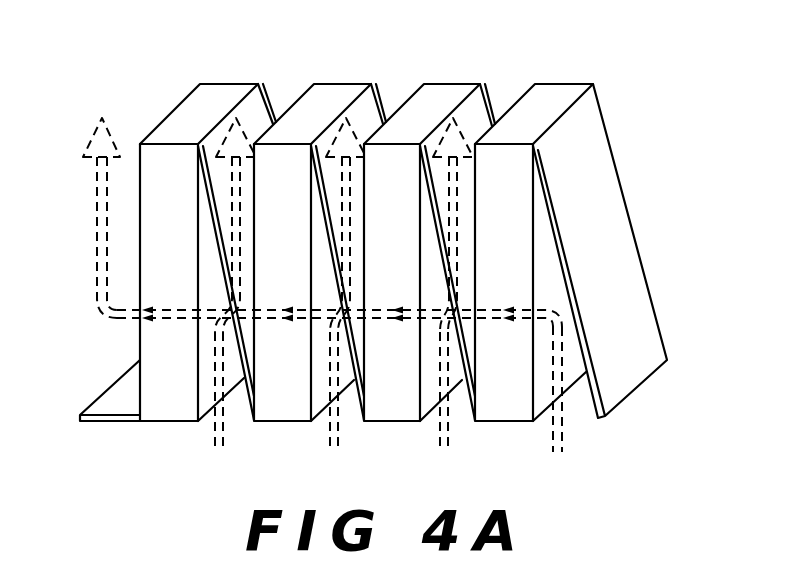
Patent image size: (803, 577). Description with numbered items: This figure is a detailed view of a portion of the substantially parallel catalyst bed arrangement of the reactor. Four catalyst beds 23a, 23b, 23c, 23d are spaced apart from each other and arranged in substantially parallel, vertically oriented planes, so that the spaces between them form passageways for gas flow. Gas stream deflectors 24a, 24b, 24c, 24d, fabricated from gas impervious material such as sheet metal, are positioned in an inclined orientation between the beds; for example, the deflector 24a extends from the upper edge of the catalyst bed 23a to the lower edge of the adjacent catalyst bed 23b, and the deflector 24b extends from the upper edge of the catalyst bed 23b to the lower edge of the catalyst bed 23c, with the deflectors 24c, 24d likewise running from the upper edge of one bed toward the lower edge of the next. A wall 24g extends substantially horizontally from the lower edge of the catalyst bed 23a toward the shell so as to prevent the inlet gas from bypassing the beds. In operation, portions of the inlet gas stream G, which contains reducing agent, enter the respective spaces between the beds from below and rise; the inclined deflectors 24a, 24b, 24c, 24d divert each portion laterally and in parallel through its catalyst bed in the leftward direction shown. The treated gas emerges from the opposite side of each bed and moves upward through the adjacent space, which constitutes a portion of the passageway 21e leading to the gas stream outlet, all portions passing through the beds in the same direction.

The passageway 21e is at (141, 91).
The catalyst bed 23a is at (193, 232).
The catalyst bed 23b is at (306, 232).
The catalyst bed 23c is at (416, 232).
The catalyst bed 23d is at (527, 232).
The deflector 24a is at (244, 115).
The deflector 24b is at (371, 116).
The deflector 24c is at (484, 118).
The deflector 24d is at (642, 258).
The wall 24g is at (101, 388).
The inlet gas stream G is at (386, 408).